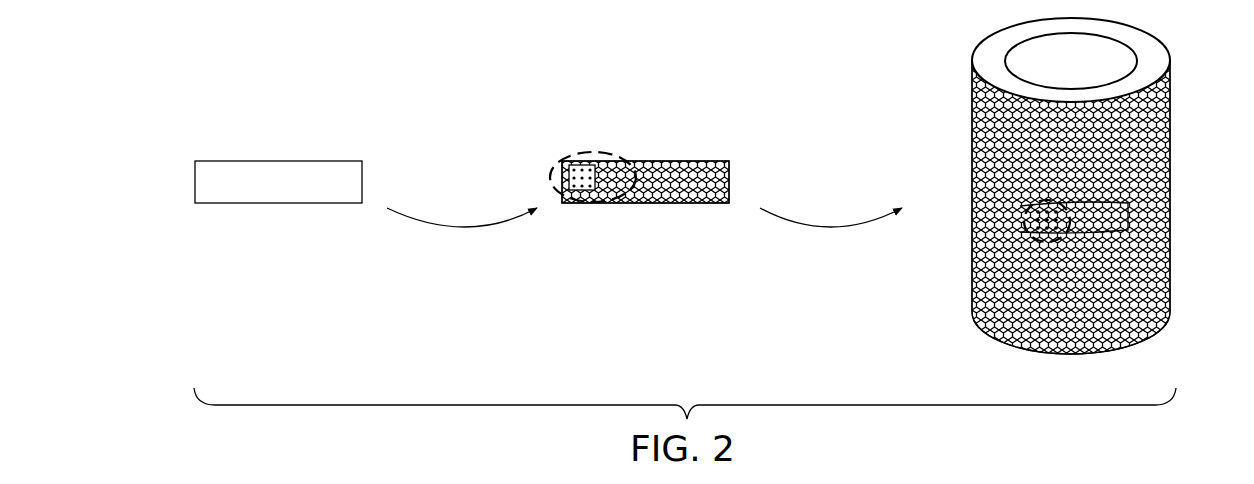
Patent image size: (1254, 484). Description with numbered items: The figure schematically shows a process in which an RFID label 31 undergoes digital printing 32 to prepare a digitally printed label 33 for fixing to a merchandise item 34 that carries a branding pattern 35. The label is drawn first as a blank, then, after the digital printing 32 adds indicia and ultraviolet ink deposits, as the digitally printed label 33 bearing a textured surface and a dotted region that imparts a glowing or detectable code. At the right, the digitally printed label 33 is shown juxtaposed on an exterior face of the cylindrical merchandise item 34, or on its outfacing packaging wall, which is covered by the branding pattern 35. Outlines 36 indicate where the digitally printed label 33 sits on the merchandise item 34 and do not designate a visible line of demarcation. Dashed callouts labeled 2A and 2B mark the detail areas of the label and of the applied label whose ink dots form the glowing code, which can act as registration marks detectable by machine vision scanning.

The RFID label 31 is at (243, 160).
The digital printing 32 is at (473, 228).
The digitally printed label 33 is at (652, 205).
The merchandise item 34 is at (972, 128).
The branding pattern 35 is at (683, 160).
The outlines 36 is at (1018, 222).
The detail view callout 2A is at (593, 150).
The detail view callout 2B is at (1005, 205).